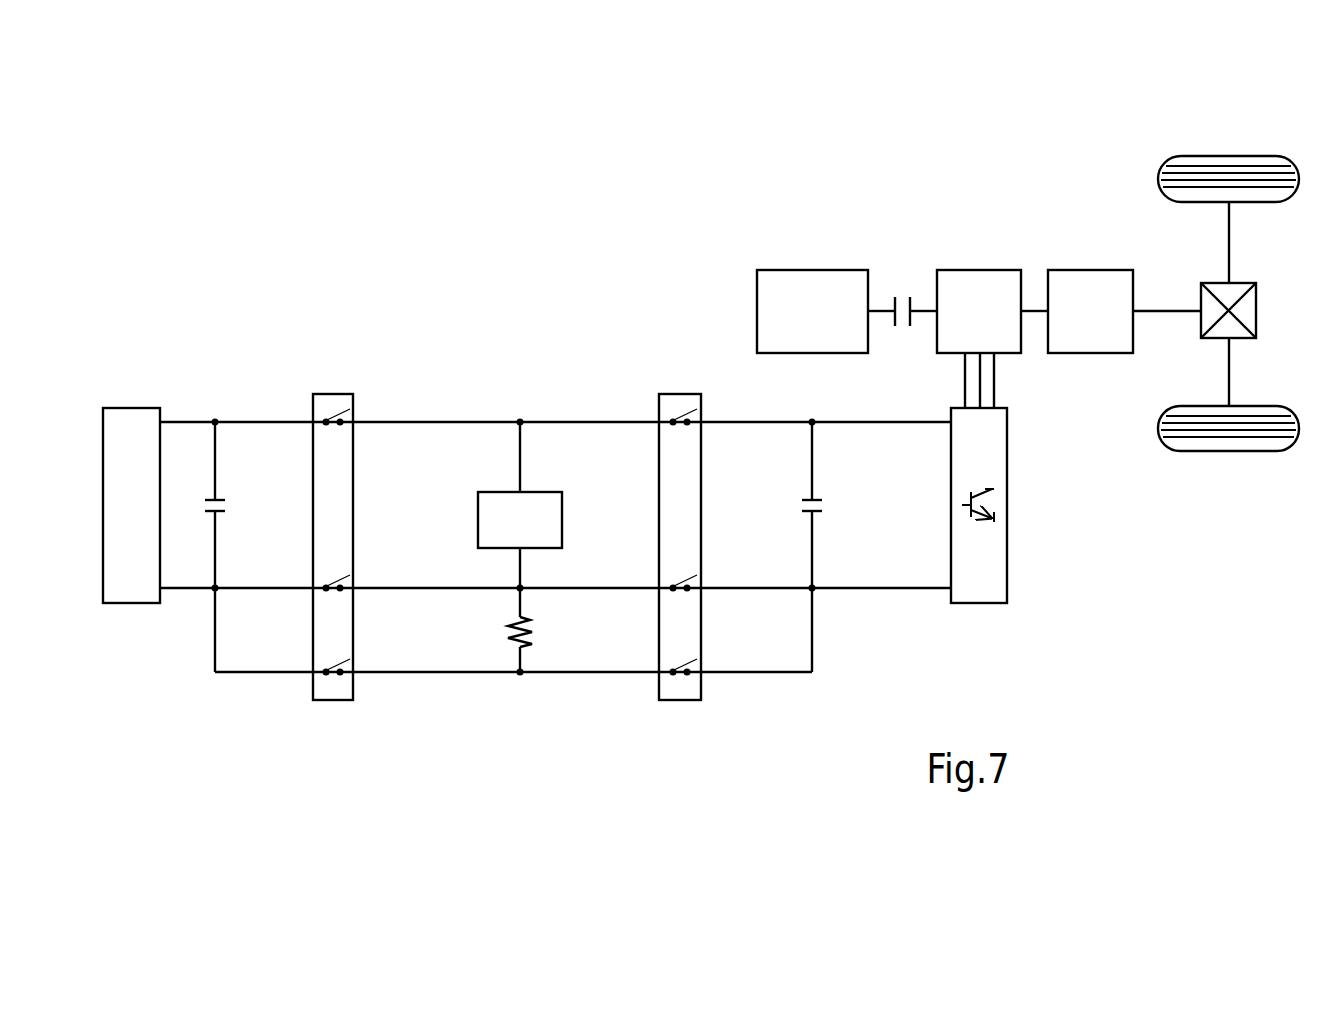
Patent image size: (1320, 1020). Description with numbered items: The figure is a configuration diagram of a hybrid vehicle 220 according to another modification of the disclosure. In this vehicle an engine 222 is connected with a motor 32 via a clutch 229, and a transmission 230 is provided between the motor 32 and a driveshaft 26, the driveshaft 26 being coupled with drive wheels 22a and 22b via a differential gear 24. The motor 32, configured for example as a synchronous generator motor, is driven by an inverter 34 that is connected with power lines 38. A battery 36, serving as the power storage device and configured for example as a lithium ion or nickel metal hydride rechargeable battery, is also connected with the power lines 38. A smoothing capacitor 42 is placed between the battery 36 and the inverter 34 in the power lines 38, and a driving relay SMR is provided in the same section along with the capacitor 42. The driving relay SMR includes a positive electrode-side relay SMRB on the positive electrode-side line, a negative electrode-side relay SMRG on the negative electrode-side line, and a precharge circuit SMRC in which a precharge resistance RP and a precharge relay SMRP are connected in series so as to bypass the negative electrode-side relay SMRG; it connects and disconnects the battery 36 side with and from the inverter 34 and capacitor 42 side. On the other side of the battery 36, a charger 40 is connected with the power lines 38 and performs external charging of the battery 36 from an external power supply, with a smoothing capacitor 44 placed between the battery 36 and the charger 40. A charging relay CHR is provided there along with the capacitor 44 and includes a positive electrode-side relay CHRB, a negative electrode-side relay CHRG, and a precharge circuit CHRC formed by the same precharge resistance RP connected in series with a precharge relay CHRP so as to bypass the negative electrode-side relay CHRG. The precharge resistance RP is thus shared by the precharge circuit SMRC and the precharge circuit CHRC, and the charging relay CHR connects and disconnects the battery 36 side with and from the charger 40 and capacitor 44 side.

The charger 40 is at (131, 407).
The capacitor 44 is at (210, 498).
The charging relay CHR is at (332, 393).
The positive electrode-side relay CHRB is at (350, 409).
The negative electrode-side relay CHRG is at (350, 575).
The precharge relay CHRP is at (350, 659).
The precharge circuit CHRC is at (379, 542).
The battery 36 is at (546, 490).
The precharge resistance RP is at (531, 628).
The driving relay SMR is at (680, 393).
The positive electrode-side relay SMRB is at (697, 409).
The negative electrode-side relay SMRG is at (697, 575).
The precharge relay SMRP is at (697, 659).
The precharge circuit SMRC is at (661, 542).
The capacitor 42 is at (808, 498).
The power lines 38 is at (840, 425).
The inverter 34 is at (978, 605).
The engine 222 is at (812, 268).
The clutch 229 is at (903, 294).
The motor 32 is at (979, 268).
The transmission 230 is at (1090, 268).
The driveshaft 26 is at (1173, 308).
The differential gear 24 is at (1240, 281).
The drive wheel 22a is at (1228, 155).
The drive wheel 22b is at (1228, 453).
The hybrid vehicle 220 is at (1076, 128).